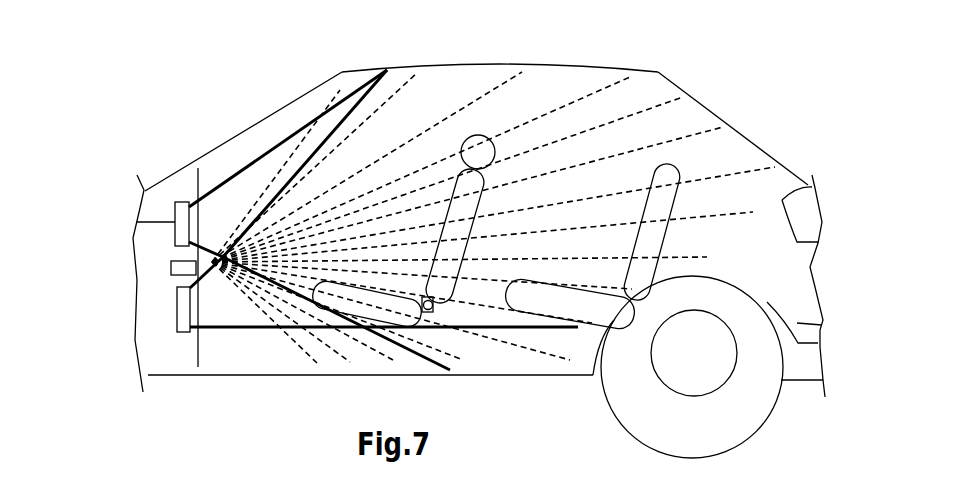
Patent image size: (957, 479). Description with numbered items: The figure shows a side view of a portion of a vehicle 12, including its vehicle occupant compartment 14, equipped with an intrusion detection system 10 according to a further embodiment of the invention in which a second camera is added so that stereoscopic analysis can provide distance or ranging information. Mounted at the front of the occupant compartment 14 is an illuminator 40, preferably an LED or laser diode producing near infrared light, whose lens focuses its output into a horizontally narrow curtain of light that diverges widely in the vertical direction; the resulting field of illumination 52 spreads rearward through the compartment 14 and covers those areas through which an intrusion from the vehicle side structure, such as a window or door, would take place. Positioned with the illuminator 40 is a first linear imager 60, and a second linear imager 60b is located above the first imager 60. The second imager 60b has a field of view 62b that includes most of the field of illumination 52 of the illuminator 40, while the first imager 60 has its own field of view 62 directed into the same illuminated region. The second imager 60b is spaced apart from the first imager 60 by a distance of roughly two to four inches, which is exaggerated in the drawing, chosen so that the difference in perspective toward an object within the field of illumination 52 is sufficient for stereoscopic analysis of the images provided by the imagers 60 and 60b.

The intrusion detection system 10 is at (170, 327).
The vehicle 12 is at (160, 140).
The vehicle occupant compartment 14 is at (528, 97).
The illuminator 40 is at (171, 268).
The field of illumination 52 is at (465, 103).
The first imager 60 is at (177, 312).
The second imager 60b is at (175, 236).
The field of view 62 is at (243, 332).
The field of view 62b is at (247, 168).